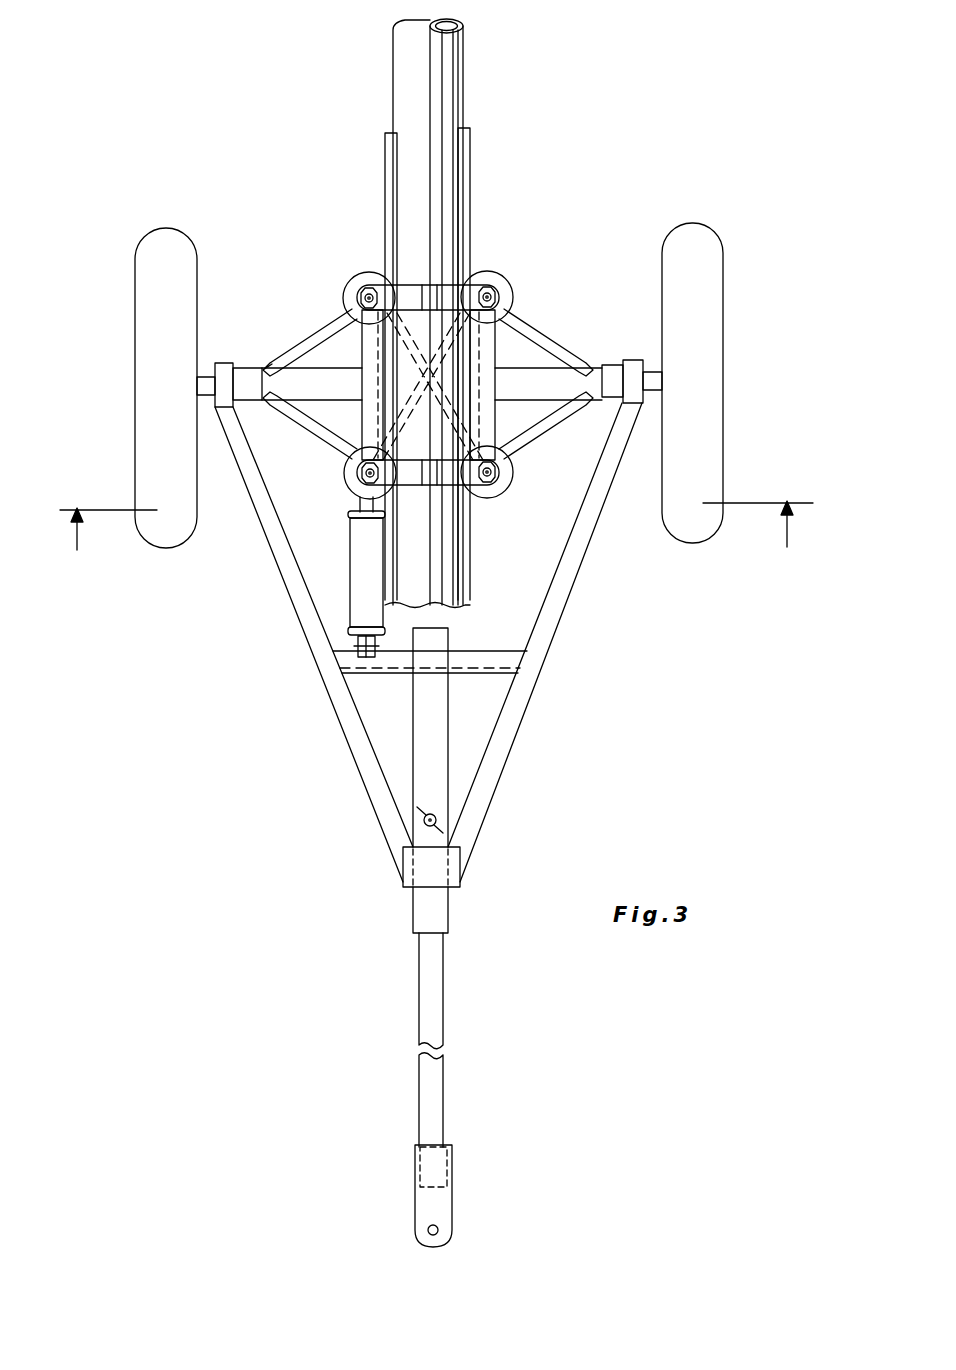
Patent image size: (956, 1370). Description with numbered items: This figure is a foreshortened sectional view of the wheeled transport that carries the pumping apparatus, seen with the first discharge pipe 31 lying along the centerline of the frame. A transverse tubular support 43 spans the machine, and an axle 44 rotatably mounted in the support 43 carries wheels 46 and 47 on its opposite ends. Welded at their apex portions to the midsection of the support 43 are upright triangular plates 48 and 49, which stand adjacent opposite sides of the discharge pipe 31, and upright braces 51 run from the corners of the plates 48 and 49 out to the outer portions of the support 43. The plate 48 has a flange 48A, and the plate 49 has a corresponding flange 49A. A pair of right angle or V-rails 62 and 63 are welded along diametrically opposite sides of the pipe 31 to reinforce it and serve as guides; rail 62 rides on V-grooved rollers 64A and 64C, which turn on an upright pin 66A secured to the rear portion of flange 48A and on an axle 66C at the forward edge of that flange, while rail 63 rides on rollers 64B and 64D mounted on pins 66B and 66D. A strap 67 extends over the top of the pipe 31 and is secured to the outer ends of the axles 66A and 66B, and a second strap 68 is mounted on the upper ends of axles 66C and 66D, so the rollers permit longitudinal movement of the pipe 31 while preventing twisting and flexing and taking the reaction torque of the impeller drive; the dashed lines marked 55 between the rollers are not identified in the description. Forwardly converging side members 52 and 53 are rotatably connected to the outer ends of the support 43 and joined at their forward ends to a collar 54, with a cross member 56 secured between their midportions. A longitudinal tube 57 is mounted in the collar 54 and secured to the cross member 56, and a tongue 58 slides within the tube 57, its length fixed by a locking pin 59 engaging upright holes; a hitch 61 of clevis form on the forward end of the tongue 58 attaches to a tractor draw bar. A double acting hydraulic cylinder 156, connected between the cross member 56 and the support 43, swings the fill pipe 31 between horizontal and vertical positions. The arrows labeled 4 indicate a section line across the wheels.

The first discharge pipe 31 is at (431, 79).
The right angle rail 62 is at (385, 160).
The right angle rail 63 is at (462, 165).
The wheel 46 is at (180, 266).
The wheel 47 is at (708, 268).
The transverse tubular support 43 is at (492, 337).
The axle 44 is at (655, 378).
The upright triangular plate 48 is at (370, 338).
The flange of plate 48 48A is at (370, 409).
The upright triangular plate 49 is at (523, 373).
The vertical frame member lower portion 49A is at (492, 434).
The upright brace 51 is at (300, 342).
The side member 52 is at (552, 628).
The side member 53 is at (348, 726).
The collar 54 is at (448, 867).
The cross braces 55 is at (405, 368).
The cross member 56 is at (498, 653).
The longitudinal tube 57 is at (442, 750).
The longitudinal tongue 58 is at (441, 1010).
The locking pin 59 is at (424, 822).
The hitch 61 is at (441, 1203).
The roller 64A is at (358, 276).
The roller 64B is at (510, 275).
The roller 64C is at (352, 493).
The roller 64D is at (514, 472).
The upright axle or pin 66A is at (364, 296).
The axle or pin 66B is at (489, 295).
The axle 66C is at (367, 476).
The axle or pin 66D is at (490, 476).
The cross member or strap 67 is at (426, 288).
The second strap 68 is at (426, 489).
The hydraulic cylinder 156 is at (360, 552).
The section line 4- 4 is at (436, 544).